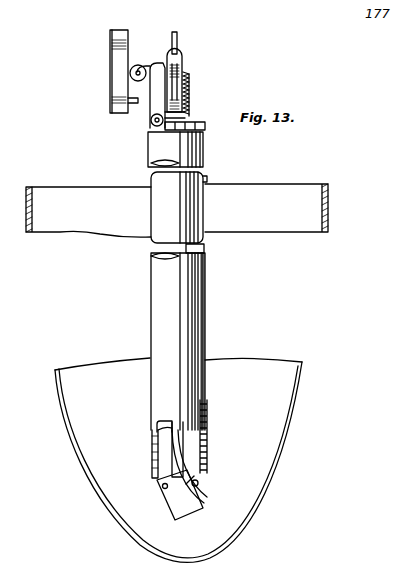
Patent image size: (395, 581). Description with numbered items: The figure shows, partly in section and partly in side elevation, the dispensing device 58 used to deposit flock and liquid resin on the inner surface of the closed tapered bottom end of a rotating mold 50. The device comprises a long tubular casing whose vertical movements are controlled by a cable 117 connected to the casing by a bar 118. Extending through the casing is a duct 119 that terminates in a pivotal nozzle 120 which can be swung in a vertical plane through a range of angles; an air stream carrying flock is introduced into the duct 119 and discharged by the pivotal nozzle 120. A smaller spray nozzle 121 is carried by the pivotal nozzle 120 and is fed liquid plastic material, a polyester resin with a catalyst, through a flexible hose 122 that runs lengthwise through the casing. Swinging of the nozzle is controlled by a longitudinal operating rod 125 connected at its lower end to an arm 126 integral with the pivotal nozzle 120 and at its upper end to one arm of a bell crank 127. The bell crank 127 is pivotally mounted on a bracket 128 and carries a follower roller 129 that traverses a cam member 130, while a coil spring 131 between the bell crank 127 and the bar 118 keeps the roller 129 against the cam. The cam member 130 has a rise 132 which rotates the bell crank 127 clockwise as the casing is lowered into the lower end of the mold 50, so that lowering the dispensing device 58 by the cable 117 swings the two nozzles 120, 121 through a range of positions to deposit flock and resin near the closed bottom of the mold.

The mold 50 is at (328, 210).
The dispensing device 58 is at (217, 323).
The cable 117 is at (178, 36).
The bar 118 is at (180, 66).
The duct 119 is at (156, 446).
The pivotal nozzle 120 is at (170, 510).
The spray nozzle 121 is at (205, 498).
The flexible hose 122 is at (158, 432).
The operating rod 125 is at (206, 127).
The arm 126 is at (198, 484).
The bell crank 127 is at (156, 104).
The bracket 128 is at (152, 126).
The roller 129 is at (141, 65).
The cam member 130 is at (118, 74).
The coil spring 131 is at (193, 90).
The rise 132 is at (133, 100).